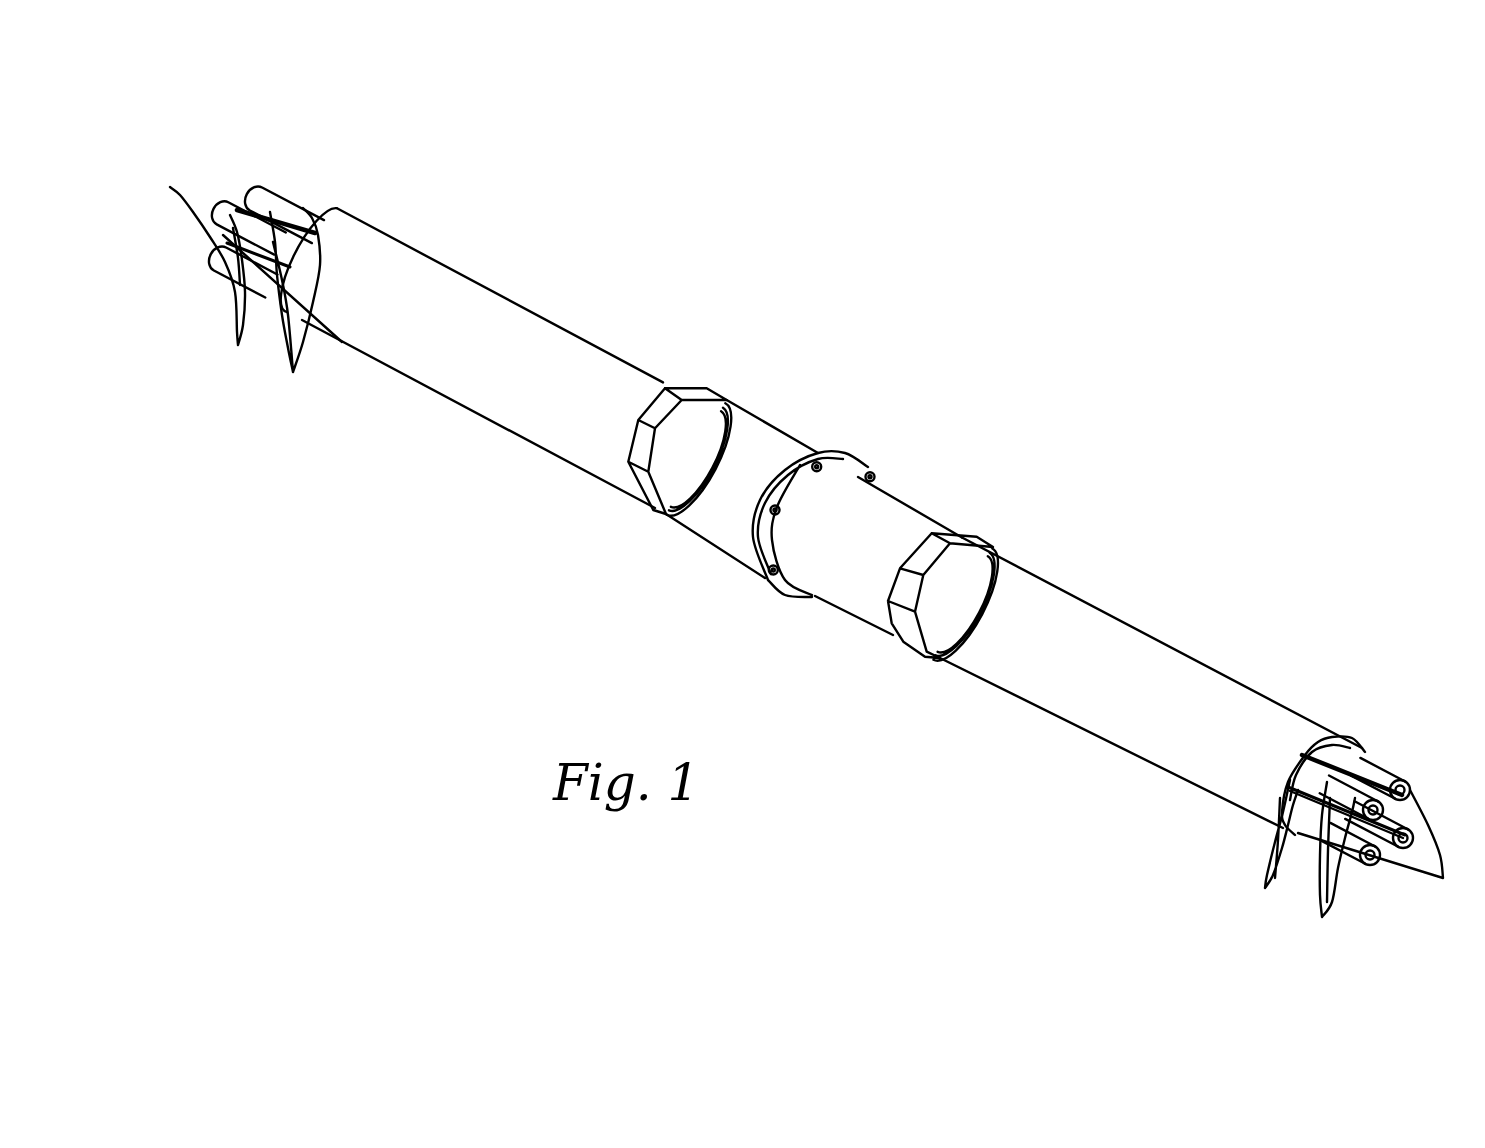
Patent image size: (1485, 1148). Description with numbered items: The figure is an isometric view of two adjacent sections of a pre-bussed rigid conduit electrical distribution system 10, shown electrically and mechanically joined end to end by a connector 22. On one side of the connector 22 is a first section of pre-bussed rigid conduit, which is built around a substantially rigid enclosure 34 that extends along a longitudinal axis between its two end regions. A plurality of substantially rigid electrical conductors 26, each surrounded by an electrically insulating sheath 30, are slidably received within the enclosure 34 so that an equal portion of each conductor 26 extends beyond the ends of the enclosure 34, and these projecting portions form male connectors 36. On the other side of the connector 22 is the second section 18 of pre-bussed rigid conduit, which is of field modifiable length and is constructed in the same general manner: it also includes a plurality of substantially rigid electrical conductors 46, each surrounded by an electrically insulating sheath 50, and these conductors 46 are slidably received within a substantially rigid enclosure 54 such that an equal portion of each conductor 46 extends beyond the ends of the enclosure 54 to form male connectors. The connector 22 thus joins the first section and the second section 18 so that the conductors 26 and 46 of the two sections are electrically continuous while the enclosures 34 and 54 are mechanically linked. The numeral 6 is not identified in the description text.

The rods 6 is at (228, 202).
The pre-bussed rigid conduit electrical distribution system 10 is at (317, 122).
The second section 18 is at (685, 376).
The connector 22 is at (730, 385).
The electrical conductors 26 is at (1323, 867).
The electrically insulating sheath 30 is at (1266, 847).
The enclosure 34 is at (1090, 668).
The male connectors 36 is at (1378, 834).
The electrical conductors 46 is at (207, 280).
The electrically insulating sheath 50 is at (295, 308).
The enclosure 54 is at (495, 359).